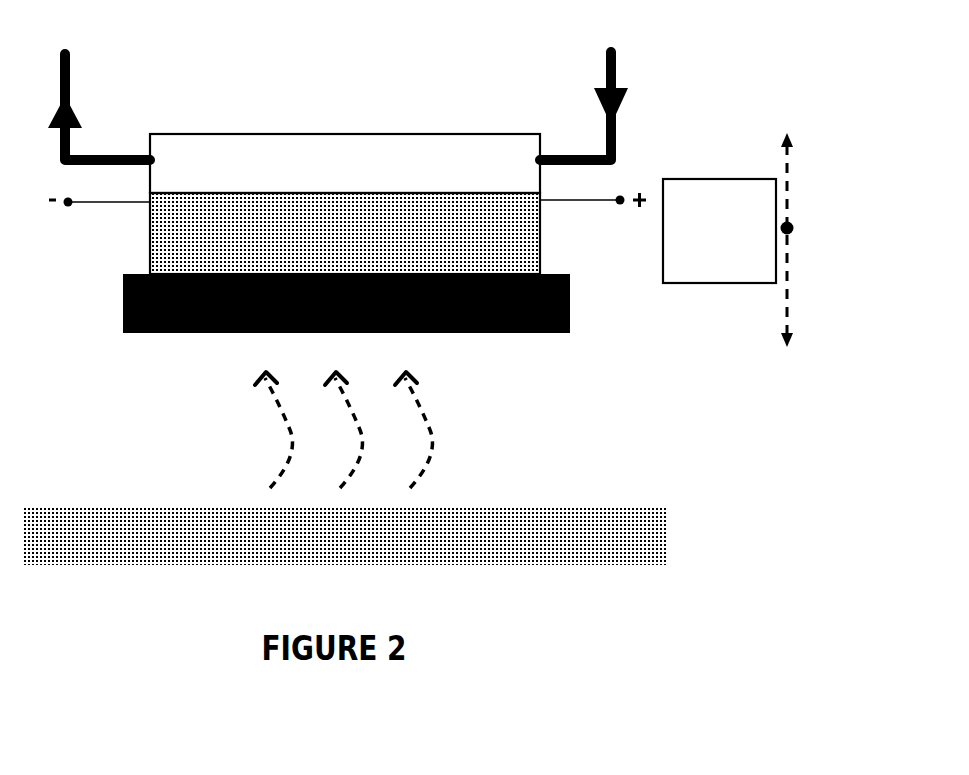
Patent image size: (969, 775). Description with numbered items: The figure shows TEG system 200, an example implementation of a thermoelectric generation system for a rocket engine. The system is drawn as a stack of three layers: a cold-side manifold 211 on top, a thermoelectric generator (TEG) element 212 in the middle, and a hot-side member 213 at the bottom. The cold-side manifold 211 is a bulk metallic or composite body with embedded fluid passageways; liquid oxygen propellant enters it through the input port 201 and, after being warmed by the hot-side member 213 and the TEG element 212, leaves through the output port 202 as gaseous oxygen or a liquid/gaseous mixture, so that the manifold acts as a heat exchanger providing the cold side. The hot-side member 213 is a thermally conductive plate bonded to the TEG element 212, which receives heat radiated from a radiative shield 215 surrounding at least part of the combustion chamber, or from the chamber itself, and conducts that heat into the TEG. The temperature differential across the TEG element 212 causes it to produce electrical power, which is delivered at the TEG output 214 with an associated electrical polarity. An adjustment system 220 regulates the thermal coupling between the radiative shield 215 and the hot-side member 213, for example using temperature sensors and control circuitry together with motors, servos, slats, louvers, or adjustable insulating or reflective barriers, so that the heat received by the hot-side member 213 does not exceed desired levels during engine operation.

The TEG system 200 is at (254, 50).
The input port 201 is at (579, 154).
The output port 202 is at (119, 154).
The cold-side manifold 211 is at (345, 163).
The thermoelectric generator (TEG) element 212 is at (345, 233).
The hot-side member 213 is at (346, 303).
The TEG output 214 is at (347, 220).
The radiative shield 215 is at (345, 536).
The adjustment system 220 is at (746, 240).